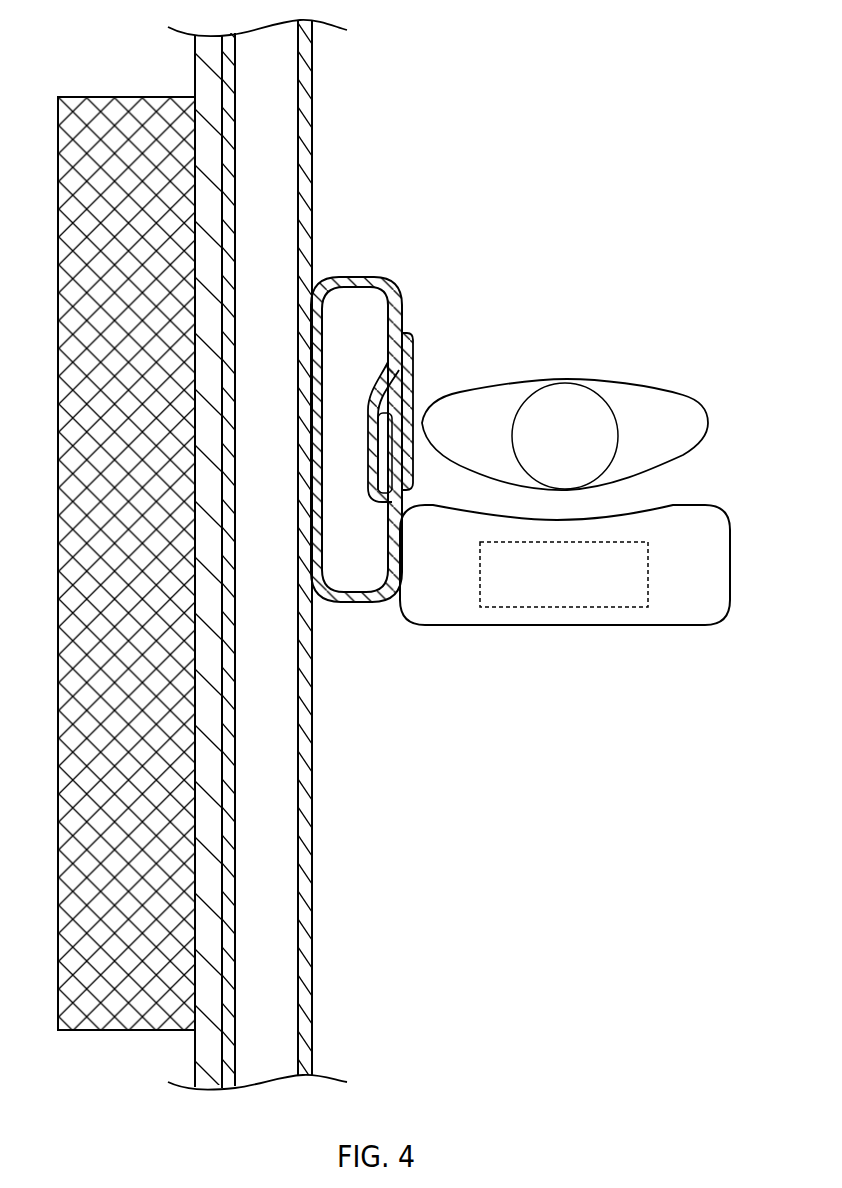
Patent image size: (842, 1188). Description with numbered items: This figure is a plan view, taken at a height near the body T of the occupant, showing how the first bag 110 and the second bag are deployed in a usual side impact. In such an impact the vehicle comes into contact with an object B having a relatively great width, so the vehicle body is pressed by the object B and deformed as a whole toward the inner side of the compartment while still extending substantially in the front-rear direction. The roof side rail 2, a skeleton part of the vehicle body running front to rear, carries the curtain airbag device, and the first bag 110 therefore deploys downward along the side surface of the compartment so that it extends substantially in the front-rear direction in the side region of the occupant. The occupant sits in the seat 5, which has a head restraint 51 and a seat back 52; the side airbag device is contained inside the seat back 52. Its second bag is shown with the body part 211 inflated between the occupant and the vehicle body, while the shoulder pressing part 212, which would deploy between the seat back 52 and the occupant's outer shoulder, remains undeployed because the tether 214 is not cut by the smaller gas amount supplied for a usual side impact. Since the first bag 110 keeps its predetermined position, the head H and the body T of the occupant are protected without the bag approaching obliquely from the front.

The object B is at (85, 97).
The roof side rail 2 is at (207, 85).
The first bag 110 is at (312, 866).
The body part 211 is at (368, 276).
The shoulder pressing part 212 is at (368, 470).
The tether 214 is at (413, 375).
The body T is at (657, 390).
The head H is at (599, 395).
The seat 5 is at (700, 628).
The head restraint 51 is at (567, 608).
The seat back 52 is at (655, 628).